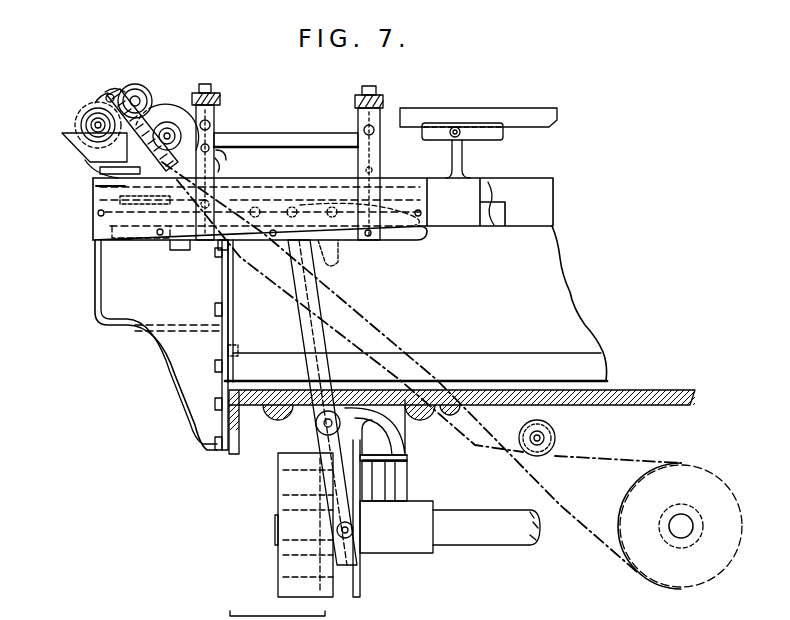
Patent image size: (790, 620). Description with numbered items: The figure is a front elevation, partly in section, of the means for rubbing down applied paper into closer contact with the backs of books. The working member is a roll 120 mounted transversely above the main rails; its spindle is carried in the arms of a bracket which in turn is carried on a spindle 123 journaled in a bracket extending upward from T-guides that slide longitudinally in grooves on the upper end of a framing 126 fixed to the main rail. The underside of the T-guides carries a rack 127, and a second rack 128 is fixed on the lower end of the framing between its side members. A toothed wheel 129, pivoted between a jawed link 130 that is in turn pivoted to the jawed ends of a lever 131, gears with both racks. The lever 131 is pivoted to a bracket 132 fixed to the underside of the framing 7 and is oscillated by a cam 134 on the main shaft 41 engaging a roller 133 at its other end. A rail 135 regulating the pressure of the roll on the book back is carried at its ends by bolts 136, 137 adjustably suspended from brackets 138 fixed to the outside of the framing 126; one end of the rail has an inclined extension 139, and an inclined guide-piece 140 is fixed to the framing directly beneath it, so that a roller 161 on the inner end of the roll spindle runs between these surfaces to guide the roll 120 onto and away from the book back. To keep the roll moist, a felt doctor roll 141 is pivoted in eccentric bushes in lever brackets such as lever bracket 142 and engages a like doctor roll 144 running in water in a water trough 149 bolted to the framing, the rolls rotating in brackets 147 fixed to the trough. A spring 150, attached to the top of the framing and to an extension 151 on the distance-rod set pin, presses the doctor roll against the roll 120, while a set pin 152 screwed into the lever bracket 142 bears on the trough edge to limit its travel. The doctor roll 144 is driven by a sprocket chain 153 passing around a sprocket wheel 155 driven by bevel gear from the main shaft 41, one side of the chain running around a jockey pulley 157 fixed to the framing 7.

The framing 7 is at (250, 413).
The main shaft 41 is at (486, 527).
The roll 120 is at (168, 108).
The spindle 123 is at (224, 162).
The framing 126 is at (433, 243).
The rack 127 is at (120, 193).
The rack 128 is at (217, 247).
The toothed wheel 129 is at (190, 228).
The jawed link 130 is at (252, 205).
The lever 131 is at (300, 314).
The bracket 132 is at (388, 430).
The roller 133 is at (364, 550).
The cam 134 is at (327, 521).
The rail 135 is at (326, 141).
The bolt 136 is at (220, 99).
The bolt 137 is at (383, 103).
The bracket 138 is at (215, 85).
The inclined extension 139 is at (215, 120).
The inclined guide-piece 140 is at (185, 172).
The doctor roll 141 is at (133, 90).
The lever bracket 142 is at (106, 101).
The doctor roll 144 is at (90, 118).
The bracket 147 is at (92, 127).
The water trough 149 is at (95, 163).
The spring 150 is at (152, 97).
The extension 151 is at (108, 95).
The set pin 152 is at (92, 154).
The sprocket chain 153 is at (262, 268).
The sprocket wheel 155 is at (648, 522).
The jockey pulley 157 is at (545, 430).
The roller 161 is at (104, 178).